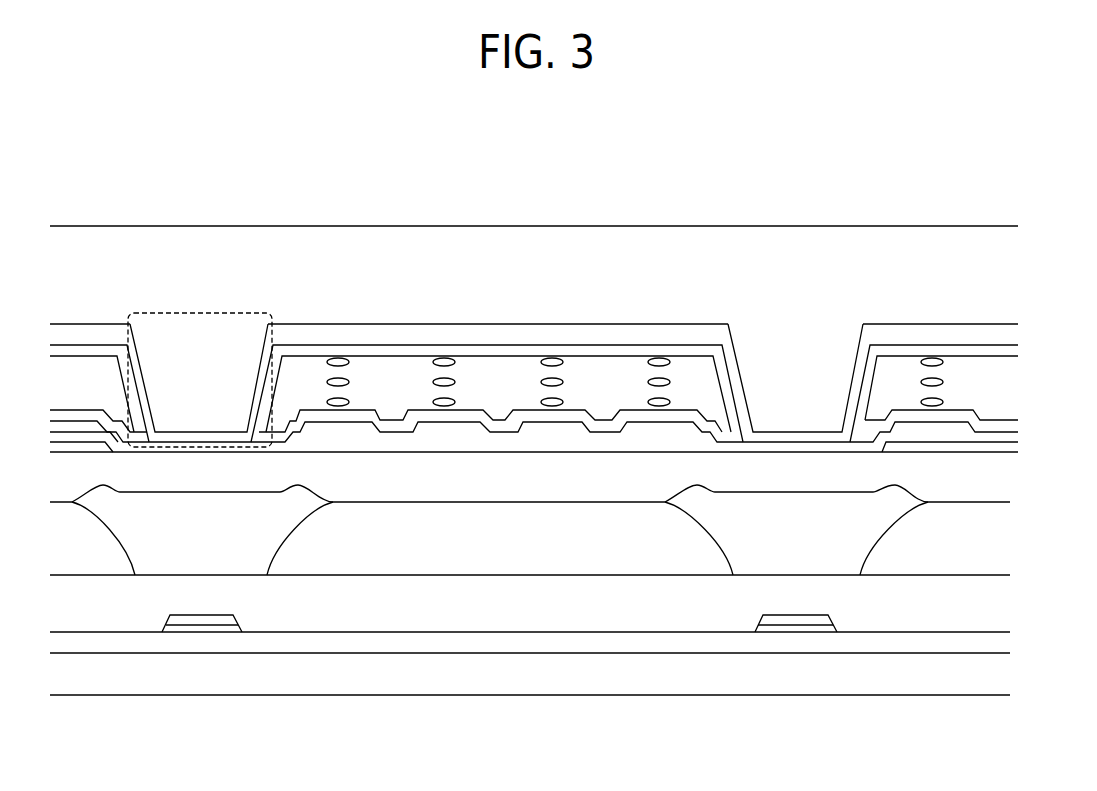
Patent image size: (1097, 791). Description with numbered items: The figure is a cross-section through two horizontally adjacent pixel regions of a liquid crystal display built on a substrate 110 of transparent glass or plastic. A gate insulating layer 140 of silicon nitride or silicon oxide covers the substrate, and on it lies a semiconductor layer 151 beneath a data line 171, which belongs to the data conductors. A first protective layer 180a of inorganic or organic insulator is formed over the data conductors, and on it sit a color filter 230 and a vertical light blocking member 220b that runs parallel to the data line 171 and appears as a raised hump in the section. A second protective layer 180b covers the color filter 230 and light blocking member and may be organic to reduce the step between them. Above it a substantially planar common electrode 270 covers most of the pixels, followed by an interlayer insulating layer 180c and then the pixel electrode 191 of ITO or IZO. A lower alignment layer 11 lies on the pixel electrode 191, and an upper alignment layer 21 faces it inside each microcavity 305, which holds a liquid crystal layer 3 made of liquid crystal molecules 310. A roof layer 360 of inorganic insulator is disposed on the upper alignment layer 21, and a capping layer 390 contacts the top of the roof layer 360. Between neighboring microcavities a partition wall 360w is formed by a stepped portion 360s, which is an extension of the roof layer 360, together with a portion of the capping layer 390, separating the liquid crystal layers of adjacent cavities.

The capping layer 390 is at (1002, 265).
The roof layer 360 is at (1002, 335).
The partition wall 360w is at (241, 314).
The stepped portion 360s is at (200, 378).
The upper alignment layer 21 is at (1002, 353).
The liquid crystal layer 3 is at (1002, 388).
The microcavity 305 is at (618, 375).
The liquid crystal molecules 310 is at (942, 380).
The lower alignment layer 11 is at (1002, 427).
The interlayer insulating layer 180c is at (1002, 437).
The common electrode 270 is at (995, 450).
The second protective layer 180b is at (463, 485).
The vertical light blocking member 220b is at (162, 530).
The color filter 230 is at (83, 548).
The data line 171 is at (187, 620).
The semiconductor layer 151 is at (225, 630).
The first protective layer 180a is at (633, 608).
The gate insulating layer 140 is at (888, 642).
The substrate 110 is at (535, 678).
The pixel electrode 191 is at (947, 427).